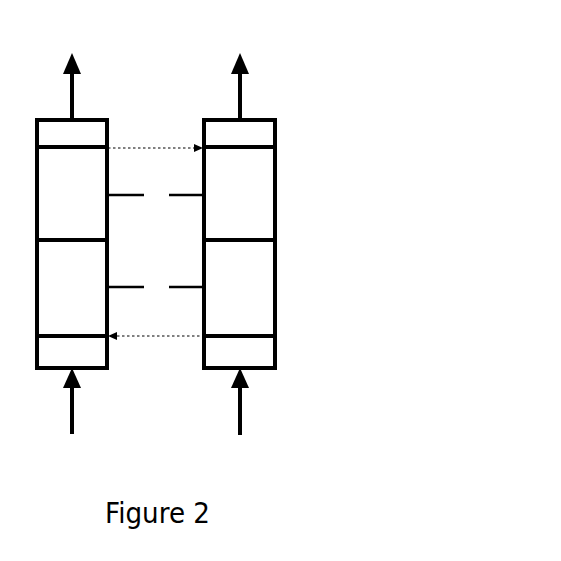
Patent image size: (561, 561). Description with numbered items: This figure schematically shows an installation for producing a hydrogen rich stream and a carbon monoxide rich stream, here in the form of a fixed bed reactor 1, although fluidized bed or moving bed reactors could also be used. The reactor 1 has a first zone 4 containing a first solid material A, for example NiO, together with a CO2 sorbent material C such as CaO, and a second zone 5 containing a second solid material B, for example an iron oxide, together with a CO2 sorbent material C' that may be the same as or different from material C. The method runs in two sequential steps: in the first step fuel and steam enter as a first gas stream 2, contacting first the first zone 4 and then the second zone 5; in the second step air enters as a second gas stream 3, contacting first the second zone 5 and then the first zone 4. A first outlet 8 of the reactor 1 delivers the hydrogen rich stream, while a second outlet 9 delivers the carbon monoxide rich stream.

The fixed bed reactor 1 is at (371, 119).
The first gas stream 2 is at (72, 413).
The second gas stream 3 is at (246, 413).
The first zone 4 is at (155, 287).
The second zone 5 is at (155, 195).
The first outlet 8 is at (74, 78).
The second outlet 9 is at (240, 78).